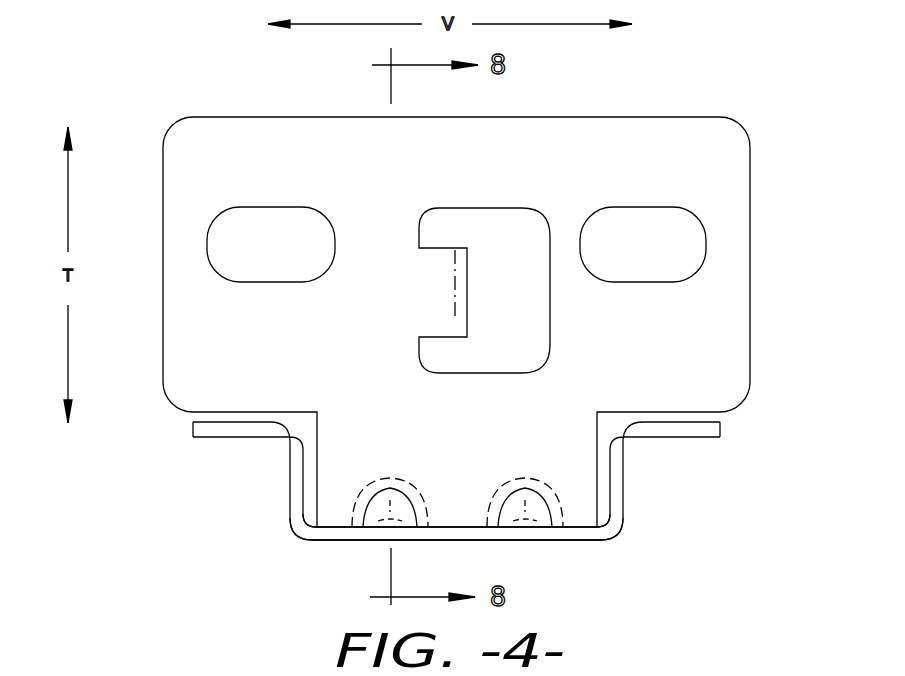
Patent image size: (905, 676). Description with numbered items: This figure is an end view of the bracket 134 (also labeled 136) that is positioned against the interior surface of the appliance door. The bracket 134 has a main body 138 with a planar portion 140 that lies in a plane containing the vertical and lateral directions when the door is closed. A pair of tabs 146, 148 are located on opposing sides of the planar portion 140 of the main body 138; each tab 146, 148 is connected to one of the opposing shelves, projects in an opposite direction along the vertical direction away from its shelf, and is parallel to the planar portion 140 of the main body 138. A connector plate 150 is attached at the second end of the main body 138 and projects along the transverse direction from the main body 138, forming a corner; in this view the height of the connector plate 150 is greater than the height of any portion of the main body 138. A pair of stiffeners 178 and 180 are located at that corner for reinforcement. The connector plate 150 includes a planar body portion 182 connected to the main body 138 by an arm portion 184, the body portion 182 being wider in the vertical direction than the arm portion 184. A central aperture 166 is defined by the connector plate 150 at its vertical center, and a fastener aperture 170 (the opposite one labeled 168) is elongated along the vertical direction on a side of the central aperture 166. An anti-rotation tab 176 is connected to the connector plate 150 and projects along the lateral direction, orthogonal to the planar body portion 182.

The bracket 134 is at (414, 292).
The clip 136 is at (437, 325).
The main body 138 is at (337, 521).
The planar portion 140 is at (531, 542).
The tab 146 is at (678, 428).
The tab 148 is at (218, 428).
The connector plate 150 is at (163, 155).
The central aperture 166 is at (545, 216).
The second aperture 168 is at (640, 222).
The fastener aperture 170 is at (265, 233).
The anti-rotation tab 176 is at (467, 295).
The stiffener 178 is at (383, 503).
The stiffener 180 is at (522, 503).
The planar body portion 182 is at (378, 180).
The arm portion 184 is at (482, 452).